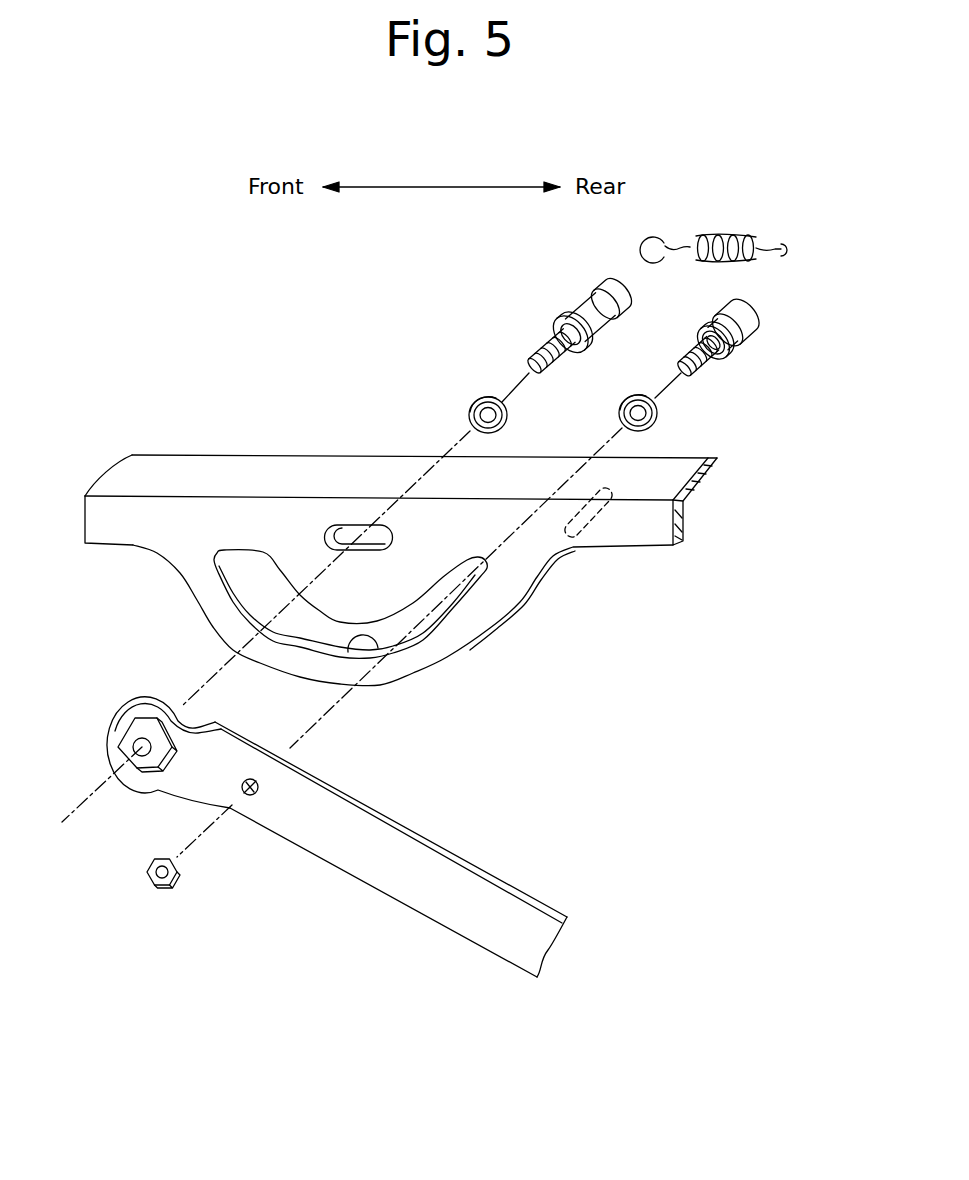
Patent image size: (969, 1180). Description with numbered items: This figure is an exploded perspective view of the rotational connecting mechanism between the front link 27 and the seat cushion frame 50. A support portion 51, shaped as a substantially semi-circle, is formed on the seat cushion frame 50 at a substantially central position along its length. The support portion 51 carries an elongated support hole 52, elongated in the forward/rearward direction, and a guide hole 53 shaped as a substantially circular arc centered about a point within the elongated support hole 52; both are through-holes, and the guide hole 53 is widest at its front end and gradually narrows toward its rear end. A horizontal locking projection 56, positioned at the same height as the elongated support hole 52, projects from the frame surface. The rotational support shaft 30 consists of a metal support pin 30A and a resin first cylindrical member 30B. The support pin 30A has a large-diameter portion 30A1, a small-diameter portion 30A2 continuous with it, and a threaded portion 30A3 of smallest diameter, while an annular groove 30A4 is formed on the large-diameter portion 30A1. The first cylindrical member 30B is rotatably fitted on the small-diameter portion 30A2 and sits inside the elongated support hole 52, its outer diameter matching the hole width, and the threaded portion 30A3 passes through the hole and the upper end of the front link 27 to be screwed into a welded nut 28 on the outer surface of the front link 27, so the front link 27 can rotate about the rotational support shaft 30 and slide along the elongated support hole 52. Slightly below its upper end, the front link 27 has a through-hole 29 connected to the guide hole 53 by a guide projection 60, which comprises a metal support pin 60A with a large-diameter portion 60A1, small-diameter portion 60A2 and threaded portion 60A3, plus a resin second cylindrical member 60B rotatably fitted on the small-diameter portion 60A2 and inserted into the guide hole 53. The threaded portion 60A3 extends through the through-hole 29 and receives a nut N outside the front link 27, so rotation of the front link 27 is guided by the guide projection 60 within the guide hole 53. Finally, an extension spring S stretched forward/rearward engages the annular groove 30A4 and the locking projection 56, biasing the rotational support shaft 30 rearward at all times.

The front link 27 is at (336, 854).
The welded nut 28 is at (145, 772).
The through-hole 29 is at (255, 795).
The nut N is at (163, 887).
The extension spring S is at (728, 235).
The rotational support shaft 30 is at (495, 288).
The support pin 30A is at (495, 288).
The large-diameter portion 30A1 is at (495, 288).
The small-diameter portion 30A2 is at (562, 323).
The threaded portion 30A3 is at (543, 353).
The annular groove 30A4 is at (593, 287).
The first cylindrical member 30B is at (457, 403).
The guide projection 60 is at (754, 368).
The support pin 60A is at (773, 368).
The large-diameter portion 60A1 is at (747, 325).
The small-diameter portion 60A2 is at (738, 343).
The threaded portion 60A3 is at (712, 358).
The second cylindrical member 60B is at (719, 422).
The seat cushion frame 50 is at (401, 572).
The support portion 51 is at (480, 622).
The elongated support hole 52 is at (345, 537).
The guide hole 53 is at (356, 647).
The locking projection 56 is at (597, 517).